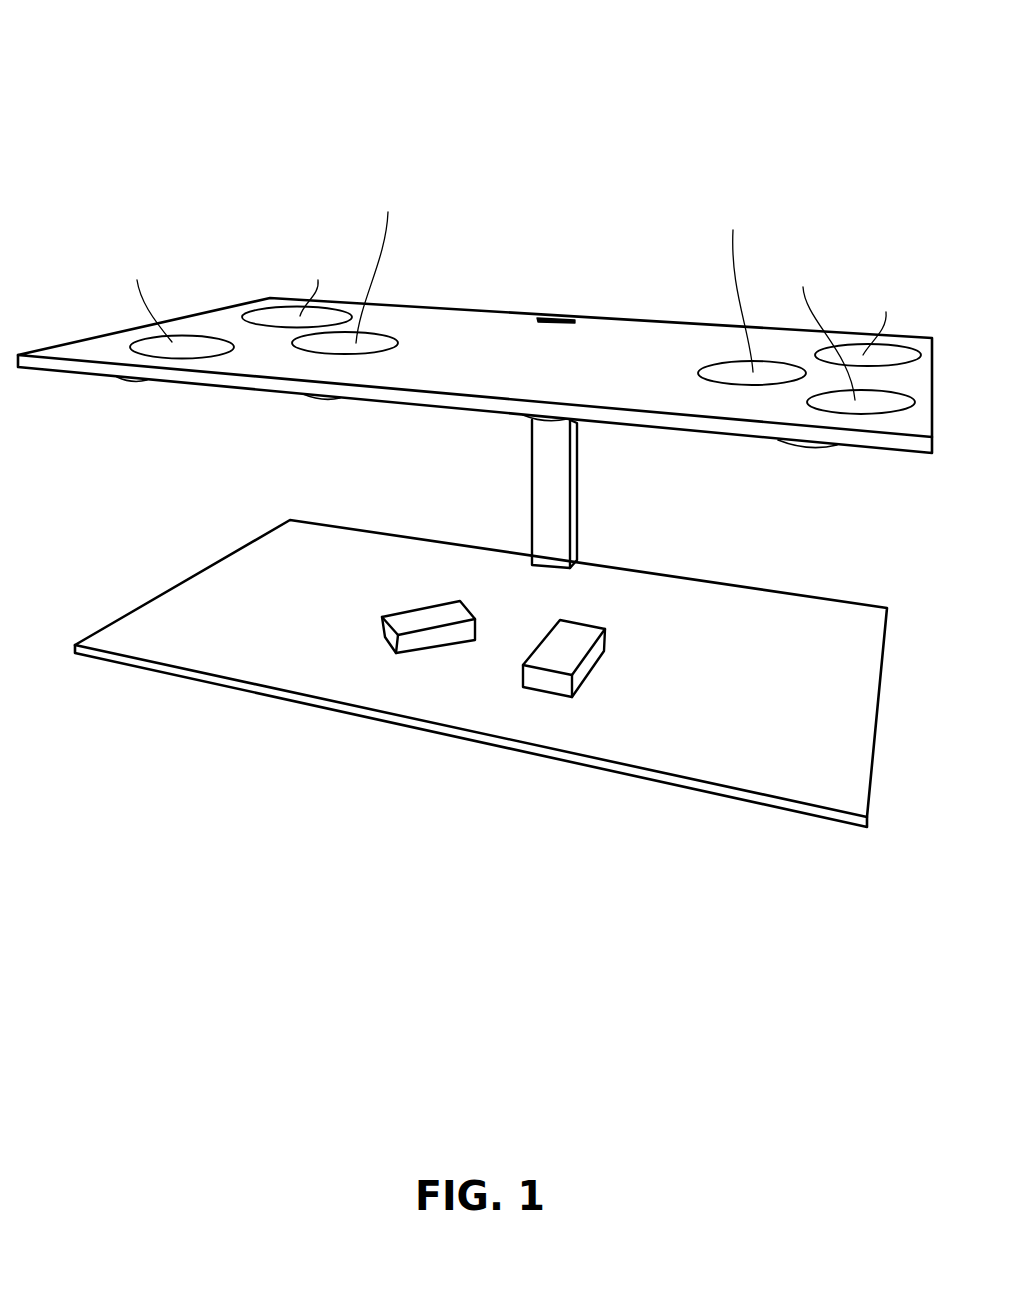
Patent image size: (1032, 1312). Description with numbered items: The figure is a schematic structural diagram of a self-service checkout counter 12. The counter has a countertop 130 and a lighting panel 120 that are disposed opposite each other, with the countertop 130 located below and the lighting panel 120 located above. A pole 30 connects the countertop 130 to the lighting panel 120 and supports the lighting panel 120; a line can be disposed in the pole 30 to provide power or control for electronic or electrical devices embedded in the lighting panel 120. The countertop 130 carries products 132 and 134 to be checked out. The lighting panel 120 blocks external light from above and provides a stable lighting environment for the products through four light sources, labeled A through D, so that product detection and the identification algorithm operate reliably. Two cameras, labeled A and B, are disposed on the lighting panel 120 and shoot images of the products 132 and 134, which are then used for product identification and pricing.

The self-service checkout counter 12 is at (850, 107).
The lighting panel 120 is at (612, 322).
The pole 30 is at (572, 488).
The countertop 130 is at (843, 612).
The product 132 is at (408, 620).
The product 134 is at (598, 643).